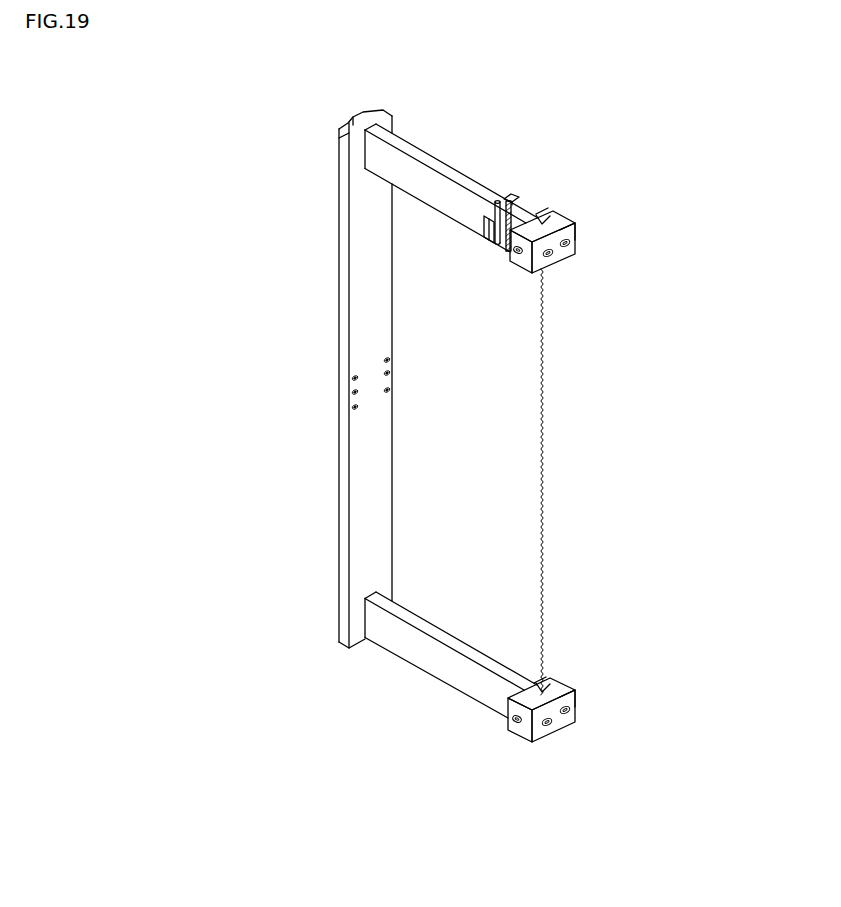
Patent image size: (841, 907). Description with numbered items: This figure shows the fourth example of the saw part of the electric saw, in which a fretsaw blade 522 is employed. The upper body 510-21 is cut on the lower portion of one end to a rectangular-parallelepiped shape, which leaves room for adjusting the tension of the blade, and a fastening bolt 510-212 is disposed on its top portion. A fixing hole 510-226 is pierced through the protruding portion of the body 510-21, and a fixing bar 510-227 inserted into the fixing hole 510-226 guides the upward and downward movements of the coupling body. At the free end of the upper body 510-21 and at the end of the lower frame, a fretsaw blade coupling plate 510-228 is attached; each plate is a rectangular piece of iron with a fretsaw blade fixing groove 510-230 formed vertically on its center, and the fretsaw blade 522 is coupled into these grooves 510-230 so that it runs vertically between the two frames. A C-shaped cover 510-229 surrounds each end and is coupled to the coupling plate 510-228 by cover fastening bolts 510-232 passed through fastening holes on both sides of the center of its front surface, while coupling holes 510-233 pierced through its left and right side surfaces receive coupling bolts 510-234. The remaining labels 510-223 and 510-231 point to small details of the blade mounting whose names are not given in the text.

The body 510-21 is at (423, 152).
The fastening bolt 510-212 is at (508, 197).
The bolt head 510-223 is at (514, 195).
The fixing hole 510-226 is at (497, 200).
The fixing bar 510-227 is at (494, 243).
The fretsaw blade coupling plate 510-228 is at (547, 219).
The cover 510-229 is at (568, 258).
The fretsaw blade fixing groove 510-230 is at (578, 225).
The groove 510-231 is at (543, 208).
The cover fastening bolt 510-232 is at (572, 246).
The coupling hole 510-233 is at (528, 270).
The coupling bolt 510-234 is at (514, 253).
The fretsaw blade 522 is at (544, 386).